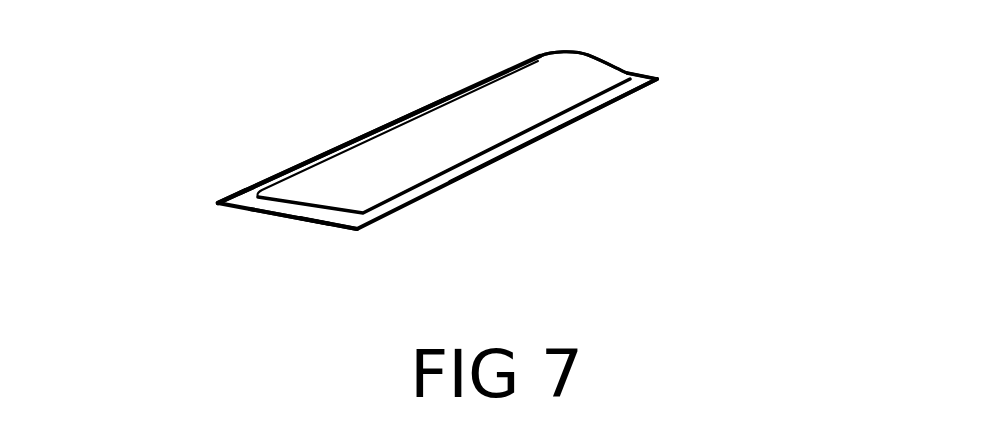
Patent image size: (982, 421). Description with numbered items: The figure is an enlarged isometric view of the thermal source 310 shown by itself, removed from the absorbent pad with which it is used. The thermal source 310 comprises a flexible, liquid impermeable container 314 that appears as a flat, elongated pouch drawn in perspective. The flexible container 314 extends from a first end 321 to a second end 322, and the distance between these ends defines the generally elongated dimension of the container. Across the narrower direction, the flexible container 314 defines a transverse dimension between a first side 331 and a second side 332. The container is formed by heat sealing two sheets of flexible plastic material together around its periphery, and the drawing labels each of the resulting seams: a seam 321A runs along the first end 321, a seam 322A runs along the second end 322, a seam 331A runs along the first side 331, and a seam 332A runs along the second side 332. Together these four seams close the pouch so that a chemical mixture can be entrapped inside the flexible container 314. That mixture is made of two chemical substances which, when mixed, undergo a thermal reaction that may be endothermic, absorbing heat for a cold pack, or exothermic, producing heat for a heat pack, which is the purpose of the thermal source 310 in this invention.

The thermal source 310 is at (495, 218).
The flexible container 314 is at (407, 143).
The first end 321 is at (312, 205).
The first end seam 321A is at (323, 227).
The second end 322 is at (621, 72).
The second end seam 322A is at (650, 76).
The first side 331 is at (503, 157).
The first side seam 331A is at (593, 112).
The second side 332 is at (313, 158).
The second side seam 332A is at (222, 202).